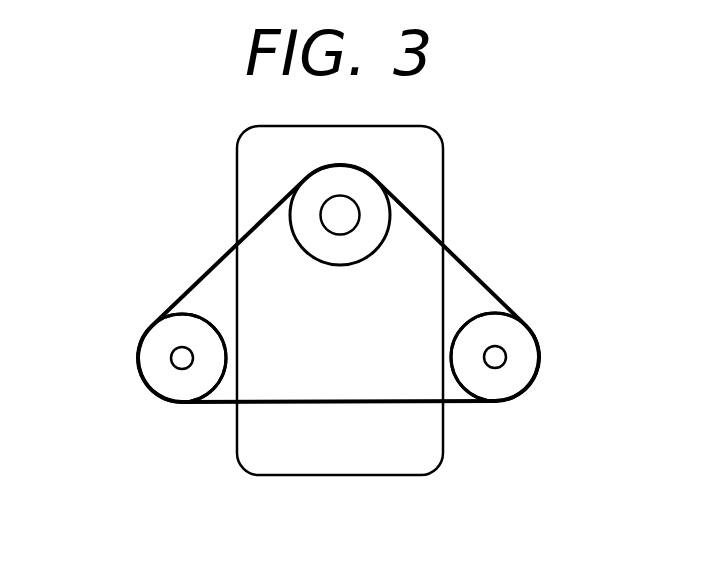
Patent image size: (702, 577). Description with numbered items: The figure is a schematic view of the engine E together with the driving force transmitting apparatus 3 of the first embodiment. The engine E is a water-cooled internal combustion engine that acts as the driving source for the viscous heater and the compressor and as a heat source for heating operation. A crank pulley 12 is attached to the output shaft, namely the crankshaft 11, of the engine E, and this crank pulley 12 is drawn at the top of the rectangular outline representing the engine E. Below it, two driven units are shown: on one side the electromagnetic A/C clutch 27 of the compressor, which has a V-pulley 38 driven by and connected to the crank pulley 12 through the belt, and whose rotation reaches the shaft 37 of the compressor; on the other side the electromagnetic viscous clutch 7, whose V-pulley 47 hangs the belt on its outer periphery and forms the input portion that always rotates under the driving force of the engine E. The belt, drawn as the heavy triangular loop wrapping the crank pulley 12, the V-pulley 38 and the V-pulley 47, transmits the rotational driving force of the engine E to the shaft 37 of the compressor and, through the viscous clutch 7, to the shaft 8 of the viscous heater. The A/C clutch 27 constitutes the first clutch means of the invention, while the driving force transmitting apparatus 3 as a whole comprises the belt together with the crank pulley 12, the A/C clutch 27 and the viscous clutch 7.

The engine E is at (443, 158).
The driving force transmitting apparatus 3 is at (190, 273).
The crank pulley 12 is at (318, 175).
The crankshaft 11 is at (330, 210).
The electromagnetic clutch (A/C clutch) 27 is at (150, 312).
The shaft of the compressor 37 is at (173, 355).
The V-pulley 38 is at (170, 383).
The electromagnetic clutch (viscous clutch) 7 is at (527, 307).
The shaft of the viscous heater 8 is at (502, 352).
The V-pulley 47 is at (485, 388).